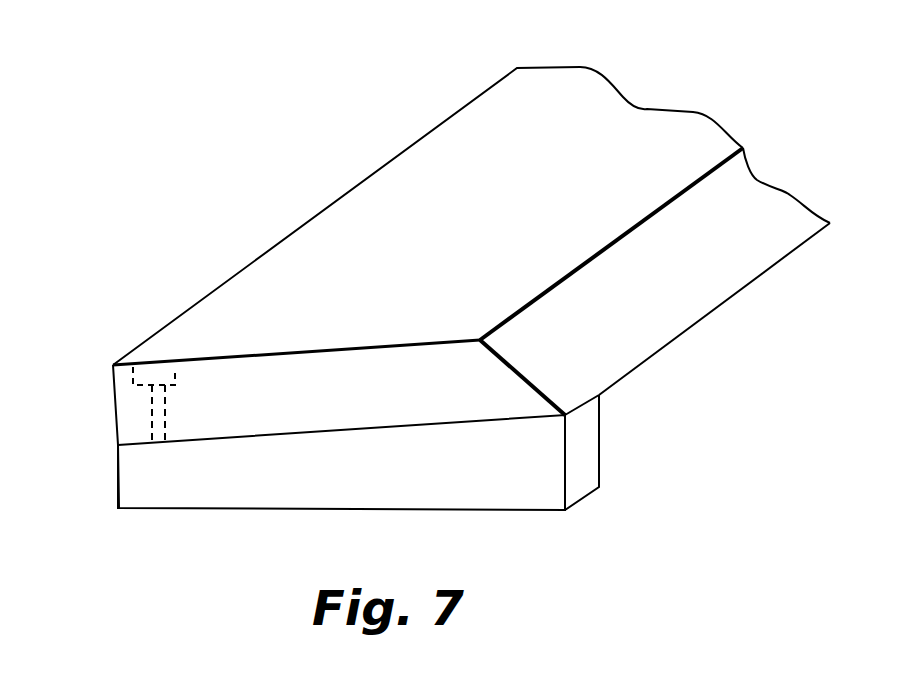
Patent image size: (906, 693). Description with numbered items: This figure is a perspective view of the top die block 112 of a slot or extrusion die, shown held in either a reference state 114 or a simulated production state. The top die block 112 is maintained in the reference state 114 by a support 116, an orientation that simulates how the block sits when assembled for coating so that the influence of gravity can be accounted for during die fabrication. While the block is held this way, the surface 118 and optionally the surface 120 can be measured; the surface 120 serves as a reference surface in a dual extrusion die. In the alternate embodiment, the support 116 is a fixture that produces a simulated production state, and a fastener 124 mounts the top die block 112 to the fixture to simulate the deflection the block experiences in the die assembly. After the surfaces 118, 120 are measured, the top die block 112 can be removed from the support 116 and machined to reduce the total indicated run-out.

The reference state 114 is at (436, 298).
The top die block 112 is at (123, 403).
The support 116 is at (260, 495).
The surface 118 is at (653, 355).
The surface 120 is at (457, 267).
The fastener 124 is at (150, 372).